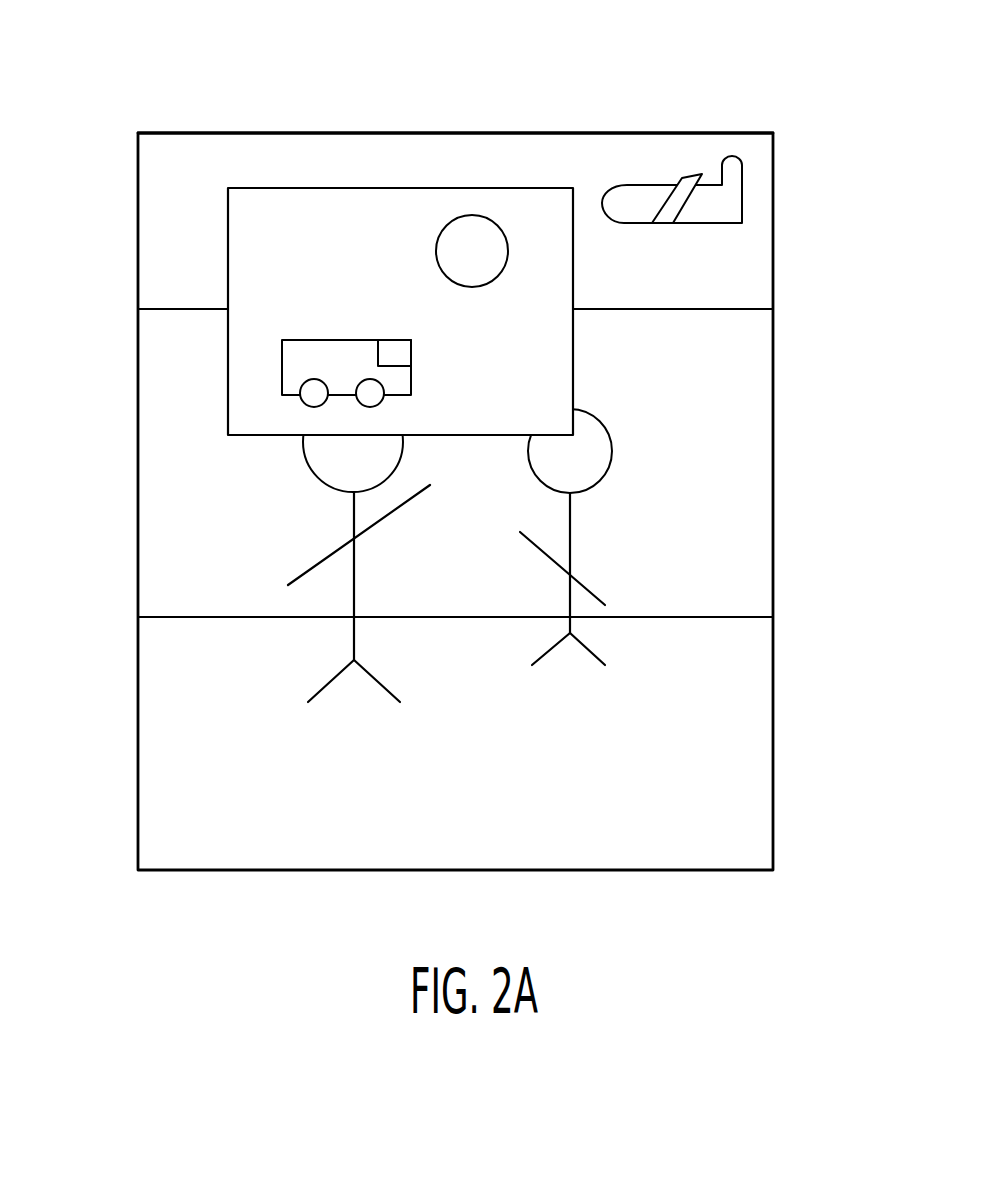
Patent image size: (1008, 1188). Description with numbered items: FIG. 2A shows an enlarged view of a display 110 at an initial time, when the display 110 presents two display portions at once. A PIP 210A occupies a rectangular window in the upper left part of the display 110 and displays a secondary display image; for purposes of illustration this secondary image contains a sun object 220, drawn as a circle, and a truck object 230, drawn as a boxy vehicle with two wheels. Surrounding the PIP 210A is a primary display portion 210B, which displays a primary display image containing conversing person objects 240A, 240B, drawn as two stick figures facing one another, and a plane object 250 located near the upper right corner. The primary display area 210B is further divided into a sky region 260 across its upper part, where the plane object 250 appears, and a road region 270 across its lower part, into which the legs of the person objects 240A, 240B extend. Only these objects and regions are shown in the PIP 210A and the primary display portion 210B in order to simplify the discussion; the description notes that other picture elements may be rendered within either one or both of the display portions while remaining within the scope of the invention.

The display 110 is at (138, 390).
The PIP 210A is at (228, 242).
The primary display portion 210B is at (757, 472).
The sun object 220 is at (435, 249).
The truck object 230 is at (412, 372).
The conversing person object 240A is at (353, 527).
The conversing person object 240B is at (571, 554).
The plane object 250 is at (678, 225).
The sky region 260 is at (580, 145).
The road region 270 is at (757, 705).